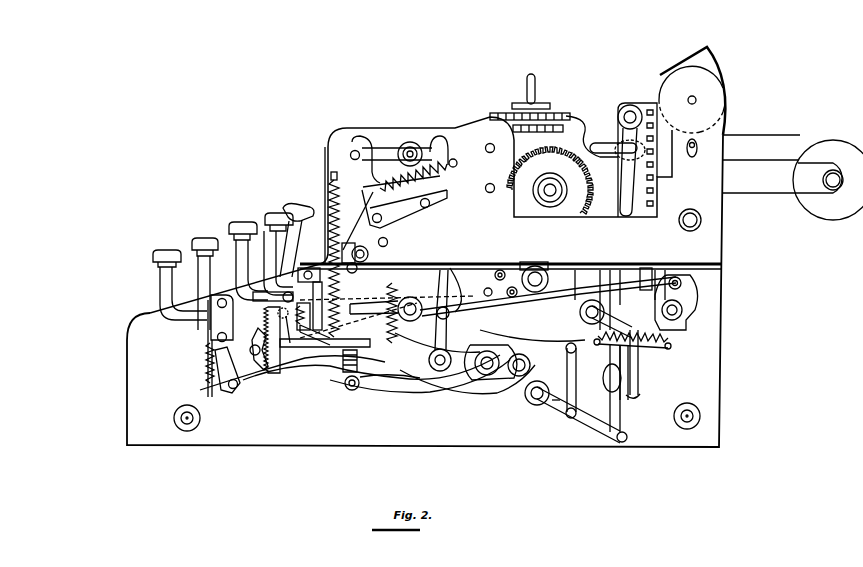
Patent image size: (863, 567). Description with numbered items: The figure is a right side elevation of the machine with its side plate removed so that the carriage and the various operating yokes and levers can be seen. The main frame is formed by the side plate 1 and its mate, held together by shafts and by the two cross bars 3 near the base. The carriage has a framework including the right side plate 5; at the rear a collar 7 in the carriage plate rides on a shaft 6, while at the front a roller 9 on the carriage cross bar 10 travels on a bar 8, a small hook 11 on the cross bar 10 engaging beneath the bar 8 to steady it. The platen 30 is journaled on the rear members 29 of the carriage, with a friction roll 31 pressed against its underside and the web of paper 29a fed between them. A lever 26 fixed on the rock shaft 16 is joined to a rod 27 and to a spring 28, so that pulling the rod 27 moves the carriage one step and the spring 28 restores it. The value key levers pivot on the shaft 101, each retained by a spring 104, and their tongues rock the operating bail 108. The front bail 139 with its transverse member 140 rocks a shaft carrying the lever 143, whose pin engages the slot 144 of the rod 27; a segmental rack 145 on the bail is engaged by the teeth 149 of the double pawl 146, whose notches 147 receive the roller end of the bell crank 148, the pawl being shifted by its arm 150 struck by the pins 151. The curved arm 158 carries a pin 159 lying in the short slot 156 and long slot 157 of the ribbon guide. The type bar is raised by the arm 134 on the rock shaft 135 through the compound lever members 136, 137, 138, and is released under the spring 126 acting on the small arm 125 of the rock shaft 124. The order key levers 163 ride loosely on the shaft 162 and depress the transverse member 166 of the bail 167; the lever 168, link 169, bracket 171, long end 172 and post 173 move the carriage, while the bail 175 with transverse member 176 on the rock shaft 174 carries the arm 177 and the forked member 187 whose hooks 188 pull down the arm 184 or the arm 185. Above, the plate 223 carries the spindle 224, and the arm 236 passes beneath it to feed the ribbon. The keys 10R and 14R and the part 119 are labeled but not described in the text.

The left side plate 1 is at (540, 440).
The cross bars 3 is at (186, 424).
The right side plate of the carriage 5 is at (488, 140).
The shaft 6 is at (699, 225).
The collar 7 is at (692, 220).
The bar 8 is at (325, 233).
The roller 9 is at (342, 247).
The cross bar of the carriage 10 is at (369, 255).
The key 10R is at (163, 250).
The hook 11 is at (396, 300).
The key 14R is at (230, 290).
The rock shaft 16 is at (682, 310).
The lever 26 is at (690, 290).
The rod 27 is at (488, 288).
The spring 28 is at (640, 345).
The rear members of the carriage frame 29 is at (753, 173).
The web of paper 29a is at (747, 140).
The platen 30 is at (727, 87).
The friction roll 31 is at (694, 147).
The shaft 101 is at (417, 302).
The spring 104 is at (330, 208).
The operating bail 108 is at (352, 320).
The lever 119 is at (626, 420).
The rock shaft 124 is at (580, 312).
The small arm 125 is at (655, 340).
The spring 126 is at (641, 335).
The arm 134 is at (605, 425).
The rock shaft 135 is at (528, 406).
The lever member 136 is at (553, 405).
The lever member 137 is at (570, 376).
The lever member 138 is at (604, 323).
The bail 139 is at (323, 352).
The transverse member 140 is at (283, 293).
The lever 143 is at (441, 320).
The slot 144 is at (443, 270).
The segmental rack 145 is at (302, 350).
The double pawl 146 is at (253, 366).
The notches 147 is at (213, 383).
The bell crank 148 is at (212, 365).
The teeth 149 is at (272, 332).
The arm 150 is at (258, 356).
The pins 151 is at (293, 296).
The short slot 156 is at (608, 382).
The long slot 157 is at (634, 366).
The curved arm 158 is at (478, 378).
The pin 159 is at (632, 388).
The shaft 162 is at (528, 396).
The key levers 163 is at (350, 380).
The transverse member 166 is at (377, 382).
The bail 167 is at (417, 380).
The lever 168 is at (512, 273).
The link 169 is at (522, 278).
The bracket 171 is at (548, 296).
The long end of the bell crank 172 is at (578, 272).
The post 173 is at (665, 275).
The rock shaft 174 is at (530, 365).
The bail 175 is at (426, 390).
The transverse member 176 is at (387, 377).
The arm 177 is at (524, 313).
The arm 184 is at (372, 196).
The arm 185 is at (448, 166).
The forked member 187 is at (400, 178).
The hooks 188 is at (356, 140).
The plate 223 is at (558, 113).
The spindle 224 is at (534, 88).
The arm 236 is at (586, 148).